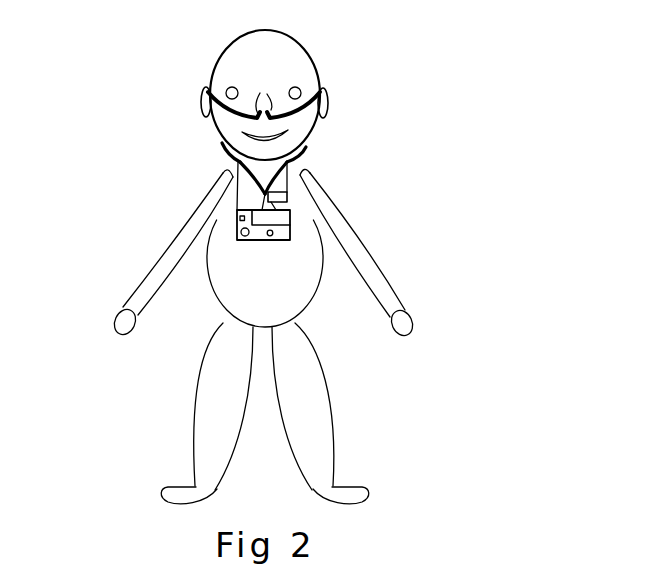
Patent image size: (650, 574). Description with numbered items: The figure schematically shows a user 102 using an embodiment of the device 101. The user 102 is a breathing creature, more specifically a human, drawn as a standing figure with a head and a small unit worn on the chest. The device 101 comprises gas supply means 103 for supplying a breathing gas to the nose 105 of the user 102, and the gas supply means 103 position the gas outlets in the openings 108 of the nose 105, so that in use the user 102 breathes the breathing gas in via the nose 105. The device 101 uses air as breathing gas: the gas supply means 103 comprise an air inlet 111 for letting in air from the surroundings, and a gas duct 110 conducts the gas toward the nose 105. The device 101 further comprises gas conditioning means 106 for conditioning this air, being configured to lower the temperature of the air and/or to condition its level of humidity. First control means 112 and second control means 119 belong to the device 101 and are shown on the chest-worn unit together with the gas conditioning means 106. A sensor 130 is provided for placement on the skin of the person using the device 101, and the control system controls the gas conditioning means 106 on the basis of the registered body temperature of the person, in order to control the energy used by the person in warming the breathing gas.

The device 101 is at (303, 238).
The user 102 is at (172, 387).
The gas supply means 103 is at (314, 148).
The nose 105 is at (274, 103).
The gas conditioning means 106 is at (291, 210).
The openings of the nose 108 is at (258, 102).
The gas duct 110 is at (303, 110).
The air inlet 111 is at (243, 234).
The first control means 112 is at (272, 236).
The second control means 119 is at (239, 214).
The sensor 130 is at (290, 196).